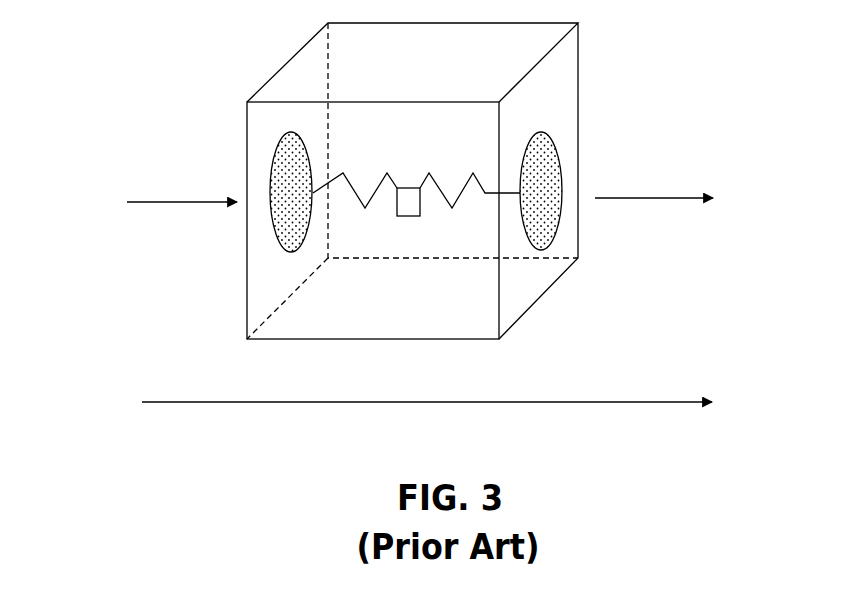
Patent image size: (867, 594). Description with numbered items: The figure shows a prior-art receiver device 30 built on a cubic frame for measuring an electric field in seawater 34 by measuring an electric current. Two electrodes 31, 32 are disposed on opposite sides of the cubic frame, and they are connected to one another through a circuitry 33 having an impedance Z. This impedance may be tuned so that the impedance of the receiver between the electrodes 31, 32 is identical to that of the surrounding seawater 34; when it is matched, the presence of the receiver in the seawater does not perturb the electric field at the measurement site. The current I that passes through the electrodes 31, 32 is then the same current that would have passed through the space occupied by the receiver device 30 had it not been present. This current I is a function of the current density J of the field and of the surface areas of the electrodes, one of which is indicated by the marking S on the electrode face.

The receiver device 30 is at (243, 58).
The electrode 31 is at (295, 253).
The electrode 32 is at (552, 250).
The circuitry 33 is at (387, 173).
The seawater 34 is at (192, 297).
The sensing electrode S is at (548, 163).
The current I is at (182, 188).
The current density J is at (427, 389).